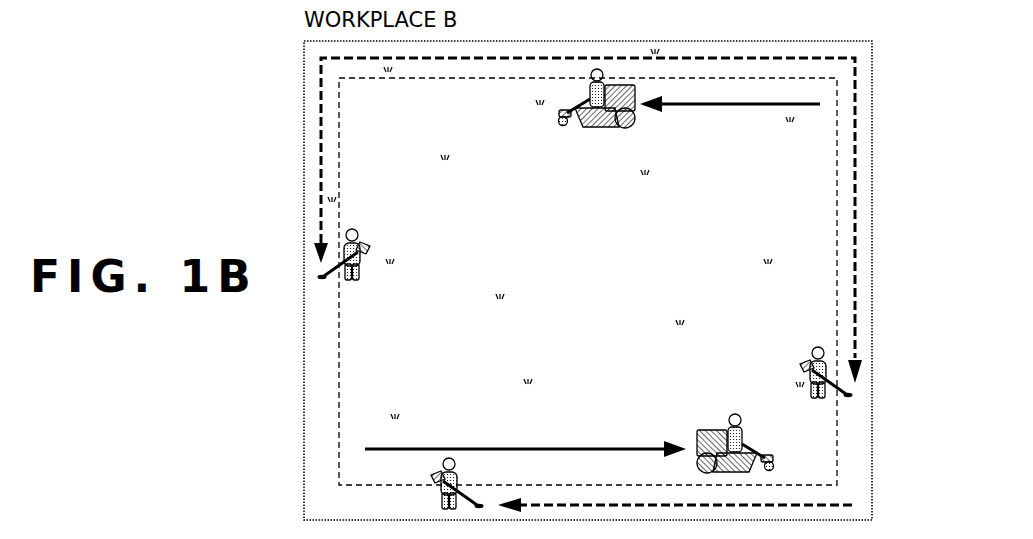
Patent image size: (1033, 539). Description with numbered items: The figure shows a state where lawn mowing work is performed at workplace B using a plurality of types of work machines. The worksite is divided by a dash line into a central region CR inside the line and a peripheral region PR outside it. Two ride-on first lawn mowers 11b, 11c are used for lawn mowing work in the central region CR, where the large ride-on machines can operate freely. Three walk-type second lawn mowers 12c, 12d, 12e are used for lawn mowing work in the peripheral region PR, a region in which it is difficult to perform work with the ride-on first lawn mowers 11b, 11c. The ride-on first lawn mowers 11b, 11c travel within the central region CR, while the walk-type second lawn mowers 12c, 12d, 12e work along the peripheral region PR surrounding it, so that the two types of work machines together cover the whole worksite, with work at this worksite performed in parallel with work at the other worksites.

The first lawn mower 11b is at (606, 128).
The first lawn mower 11c is at (705, 418).
The second lawn mower 12c is at (366, 249).
The second lawn mower 12d is at (806, 366).
The second lawn mower 12e is at (436, 482).
The central region CR is at (808, 178).
The peripheral region PR is at (862, 452).